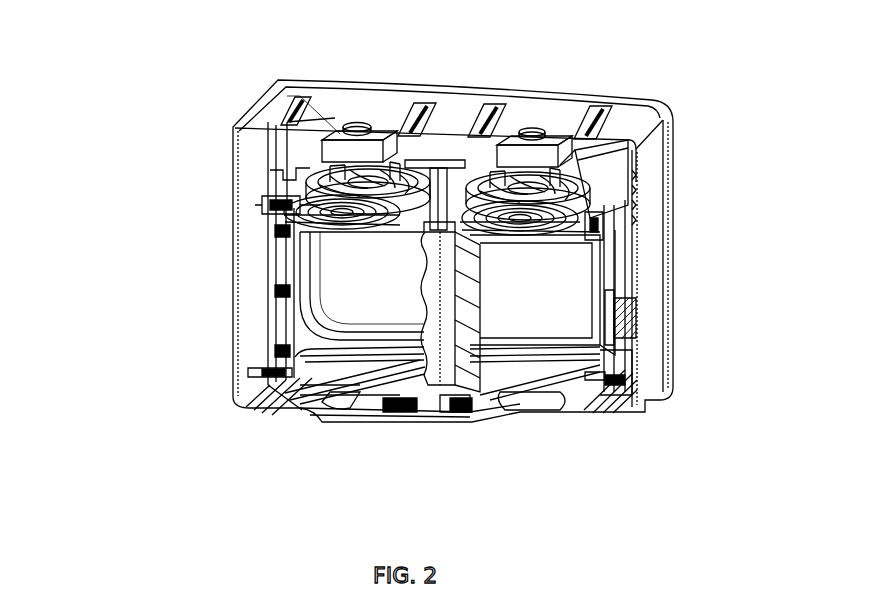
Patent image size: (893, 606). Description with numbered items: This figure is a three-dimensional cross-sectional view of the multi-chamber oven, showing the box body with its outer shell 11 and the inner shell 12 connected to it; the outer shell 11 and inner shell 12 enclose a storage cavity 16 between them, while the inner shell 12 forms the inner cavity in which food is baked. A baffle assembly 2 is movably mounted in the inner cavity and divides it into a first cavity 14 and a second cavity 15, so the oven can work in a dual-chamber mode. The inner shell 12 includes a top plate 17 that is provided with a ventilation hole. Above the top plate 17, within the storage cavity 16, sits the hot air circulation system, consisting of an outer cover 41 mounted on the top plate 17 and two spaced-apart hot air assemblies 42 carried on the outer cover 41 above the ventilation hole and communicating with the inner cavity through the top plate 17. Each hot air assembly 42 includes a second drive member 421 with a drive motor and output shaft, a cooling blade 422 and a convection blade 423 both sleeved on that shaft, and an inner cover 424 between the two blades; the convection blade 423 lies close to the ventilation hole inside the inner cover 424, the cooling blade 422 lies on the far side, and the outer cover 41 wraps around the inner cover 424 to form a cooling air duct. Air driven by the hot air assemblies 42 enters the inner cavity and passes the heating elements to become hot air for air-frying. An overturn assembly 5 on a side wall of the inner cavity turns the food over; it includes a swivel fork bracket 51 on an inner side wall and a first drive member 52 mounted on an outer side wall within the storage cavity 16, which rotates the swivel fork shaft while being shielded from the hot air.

The baffle assembly 2 is at (502, 410).
The overturn assembly 5 is at (632, 332).
The outer shell 11 is at (233, 265).
The inner shell 12 is at (275, 303).
The first cavity 14 is at (368, 395).
The second cavity 15 is at (533, 400).
The storage cavity 16 is at (252, 243).
The top plate 17 is at (590, 223).
The outer cover 41 is at (290, 196).
The hot air assembly 42 is at (303, 123).
The swivel fork bracket 51 is at (314, 408).
The first drive member 52 is at (633, 318).
The second drive member 421 is at (352, 128).
The cooling blade 422 is at (413, 150).
The convection blade 423 is at (443, 128).
The inner cover 424 is at (275, 200).